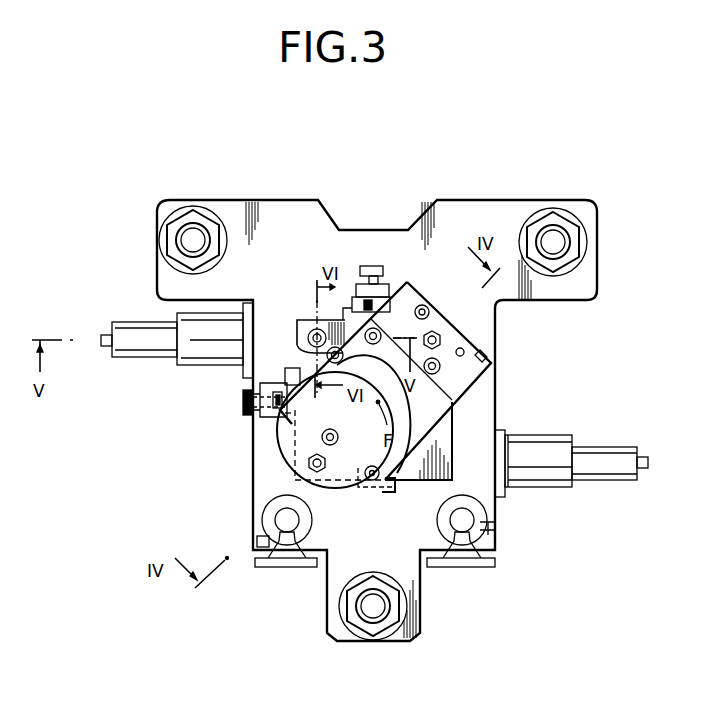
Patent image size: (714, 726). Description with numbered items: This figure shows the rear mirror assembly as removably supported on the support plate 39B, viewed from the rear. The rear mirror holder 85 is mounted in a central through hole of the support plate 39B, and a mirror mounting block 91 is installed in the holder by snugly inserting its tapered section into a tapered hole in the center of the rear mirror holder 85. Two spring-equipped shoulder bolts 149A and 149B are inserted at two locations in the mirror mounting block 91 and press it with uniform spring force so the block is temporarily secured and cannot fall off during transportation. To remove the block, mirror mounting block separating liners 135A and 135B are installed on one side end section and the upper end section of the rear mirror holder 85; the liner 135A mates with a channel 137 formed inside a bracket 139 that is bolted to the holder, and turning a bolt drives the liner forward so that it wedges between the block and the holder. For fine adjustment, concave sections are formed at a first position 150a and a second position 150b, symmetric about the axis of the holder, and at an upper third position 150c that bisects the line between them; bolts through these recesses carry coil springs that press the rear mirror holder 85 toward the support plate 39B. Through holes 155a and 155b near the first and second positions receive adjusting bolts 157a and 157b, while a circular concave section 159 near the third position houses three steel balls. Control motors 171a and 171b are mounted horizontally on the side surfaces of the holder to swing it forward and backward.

The support plate 39B is at (507, 210).
The circular concave section 159 is at (315, 328).
The mirror mounting block separating liner 135B is at (351, 292).
The spring-equipped shoulder bolt 149A is at (409, 280).
The third position 150c is at (299, 347).
The mirror mounting block separating liner 135A is at (283, 380).
The control motor 171a is at (207, 366).
The bracket 139 is at (256, 420).
The channel 137 is at (272, 420).
The adjusting bolt 157b is at (308, 465).
The through hole 155b is at (318, 490).
The second position 150b is at (333, 444).
The spring-equipped shoulder bolt 149B is at (388, 490).
The rear mirror holder 85 is at (453, 460).
The control motor 171b is at (550, 483).
The mirror mounting block 91 is at (433, 411).
The first position 150a is at (440, 366).
The adjusting bolt 157a is at (440, 338).
The through hole 155a is at (434, 333).